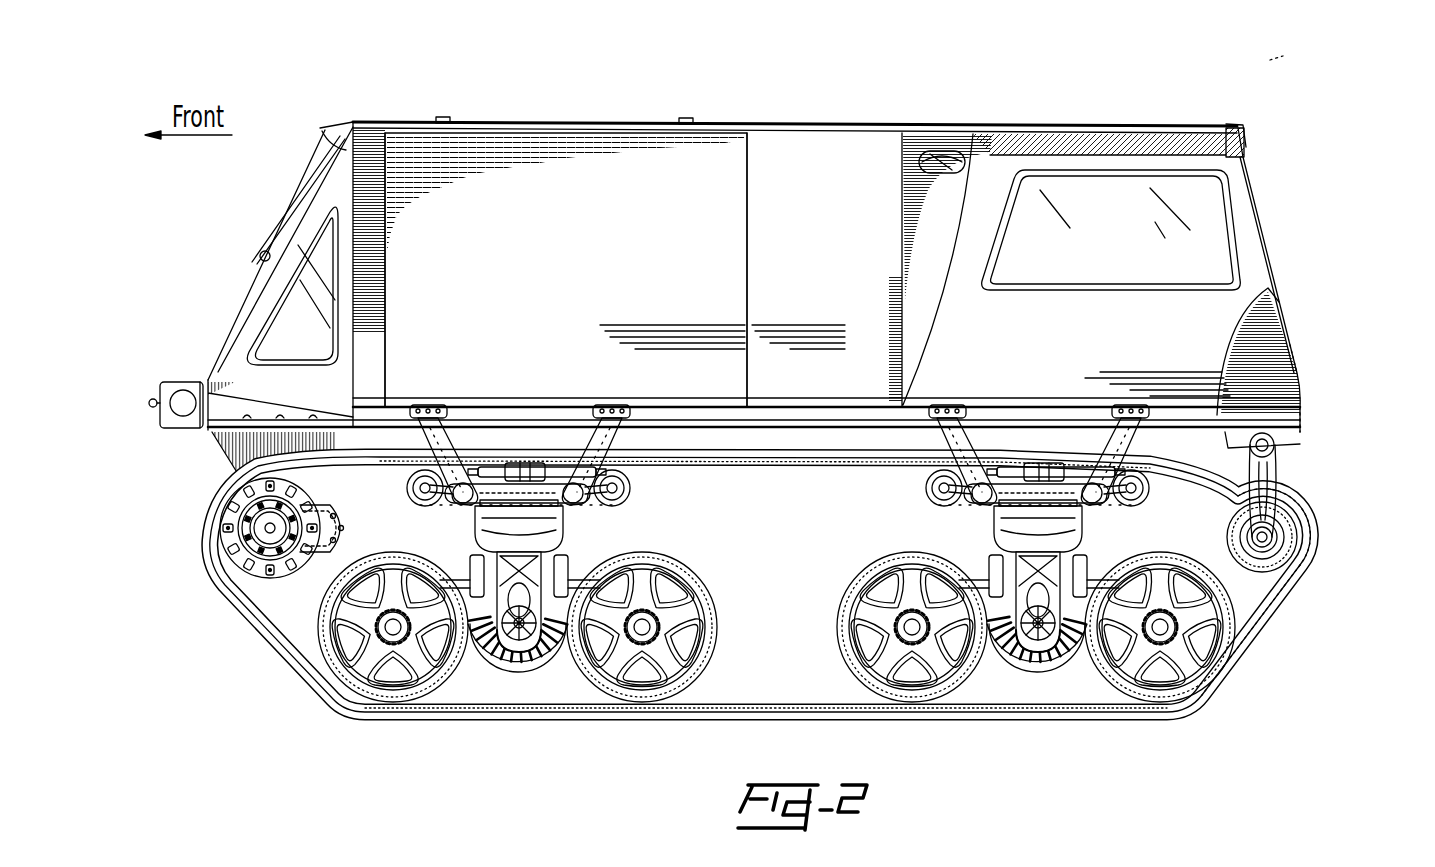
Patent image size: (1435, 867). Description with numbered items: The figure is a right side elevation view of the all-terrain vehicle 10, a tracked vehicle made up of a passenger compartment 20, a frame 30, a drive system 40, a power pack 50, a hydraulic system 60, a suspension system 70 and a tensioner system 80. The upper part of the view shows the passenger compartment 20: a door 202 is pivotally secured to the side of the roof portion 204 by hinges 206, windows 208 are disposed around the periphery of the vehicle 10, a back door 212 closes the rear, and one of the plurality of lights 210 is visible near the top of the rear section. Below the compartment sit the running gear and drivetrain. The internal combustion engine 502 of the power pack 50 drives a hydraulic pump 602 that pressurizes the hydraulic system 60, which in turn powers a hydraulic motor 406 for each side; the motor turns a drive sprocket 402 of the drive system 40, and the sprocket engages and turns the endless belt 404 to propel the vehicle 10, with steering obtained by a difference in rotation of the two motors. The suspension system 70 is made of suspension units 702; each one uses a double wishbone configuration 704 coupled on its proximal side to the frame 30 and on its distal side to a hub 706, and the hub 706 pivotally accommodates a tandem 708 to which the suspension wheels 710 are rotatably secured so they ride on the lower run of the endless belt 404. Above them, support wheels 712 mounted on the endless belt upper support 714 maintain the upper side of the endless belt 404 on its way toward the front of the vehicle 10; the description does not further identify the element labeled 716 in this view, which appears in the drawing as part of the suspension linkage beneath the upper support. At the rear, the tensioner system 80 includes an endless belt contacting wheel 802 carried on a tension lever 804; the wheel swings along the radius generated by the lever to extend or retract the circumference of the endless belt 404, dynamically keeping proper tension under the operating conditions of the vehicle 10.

The all-terrain vehicle 10 is at (1285, 55).
The passenger compartment 20 is at (1274, 194).
The frame 30 is at (235, 447).
The drive system 40 is at (1270, 690).
The power pack 50 is at (1310, 333).
The hydraulic system 60 is at (1325, 403).
The suspension system 70 is at (1292, 627).
The tensioner system 80 is at (1300, 464).
The door 202 is at (582, 245).
The roof portion 204 is at (565, 118).
The hinge 206 is at (1242, 128).
The window 208 is at (318, 326).
The light 210 is at (942, 149).
The back door 212 is at (1268, 250).
The drive sprocket 402 is at (240, 562).
The endless belt 404 is at (1318, 533).
The hydraulic motor 406 is at (282, 590).
The internal combustion engine 502 is at (1320, 377).
The hydraulic pump 602 is at (1325, 432).
The suspension unit 702 is at (520, 740).
The double wishbone configuration 704 is at (570, 552).
The hub 706 is at (1067, 665).
The tandem 708 is at (1017, 660).
The suspension wheel 710 is at (1152, 697).
The support wheel 712 is at (1150, 408).
The endless belt upper support 714 is at (522, 455).
The swing arm 716 is at (987, 520).
The endless belt contacting wheel 802 is at (1288, 568).
The tension lever 804 is at (1230, 360).